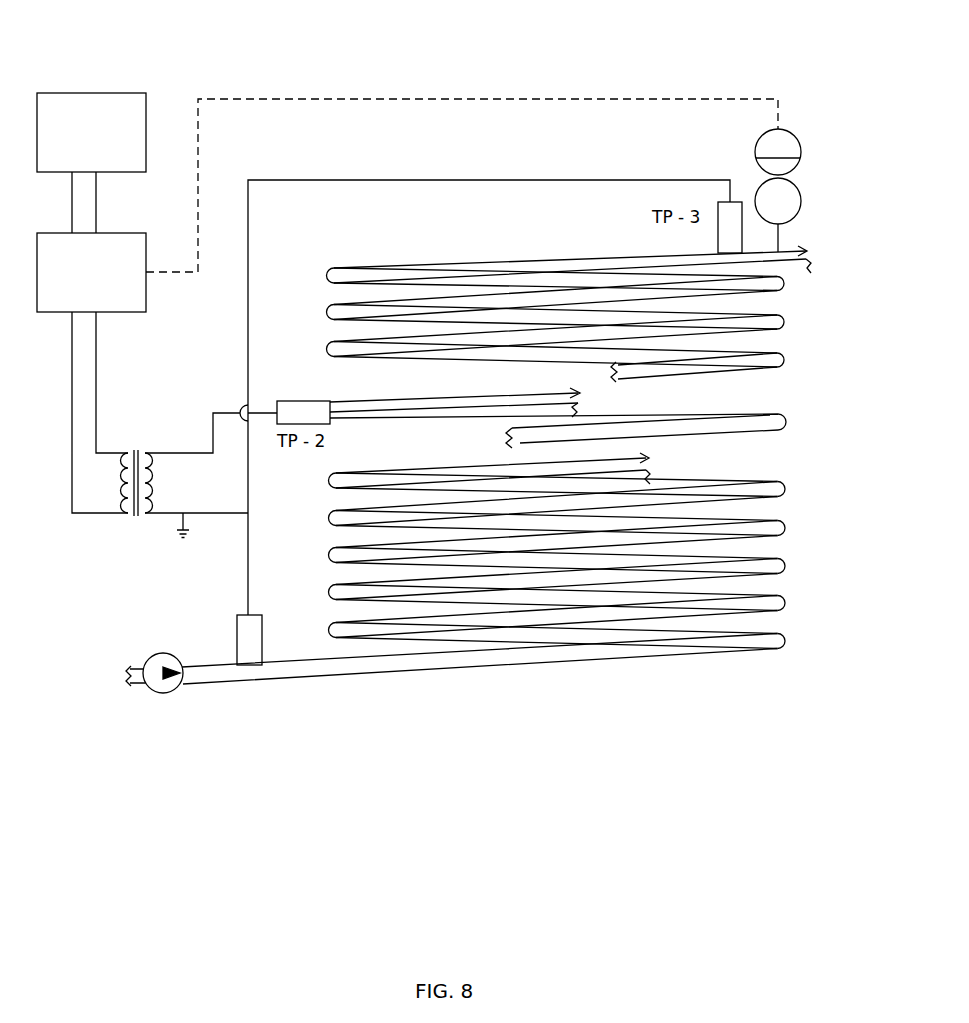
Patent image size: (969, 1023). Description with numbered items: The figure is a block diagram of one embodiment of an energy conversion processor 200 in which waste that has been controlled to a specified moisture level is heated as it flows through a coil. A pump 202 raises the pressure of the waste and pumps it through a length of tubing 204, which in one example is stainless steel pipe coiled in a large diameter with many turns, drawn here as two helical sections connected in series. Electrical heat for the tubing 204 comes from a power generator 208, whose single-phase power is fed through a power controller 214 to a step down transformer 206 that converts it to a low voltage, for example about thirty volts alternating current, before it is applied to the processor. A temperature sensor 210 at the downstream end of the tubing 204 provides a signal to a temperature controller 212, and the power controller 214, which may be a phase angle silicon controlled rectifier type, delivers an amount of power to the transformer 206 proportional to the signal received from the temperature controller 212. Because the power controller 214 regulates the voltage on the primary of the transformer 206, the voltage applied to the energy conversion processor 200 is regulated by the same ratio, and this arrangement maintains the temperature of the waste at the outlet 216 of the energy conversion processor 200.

The energy conversion processor 200 is at (369, 68).
The pump 202 is at (155, 653).
The tubing 204 is at (720, 652).
The step down transformer 206 is at (135, 519).
The power generator 208 is at (110, 93).
The temperature sensor 210 is at (766, 180).
The temperature controller 212 is at (762, 133).
The power controller 214 is at (106, 233).
The outlet 216 is at (812, 256).